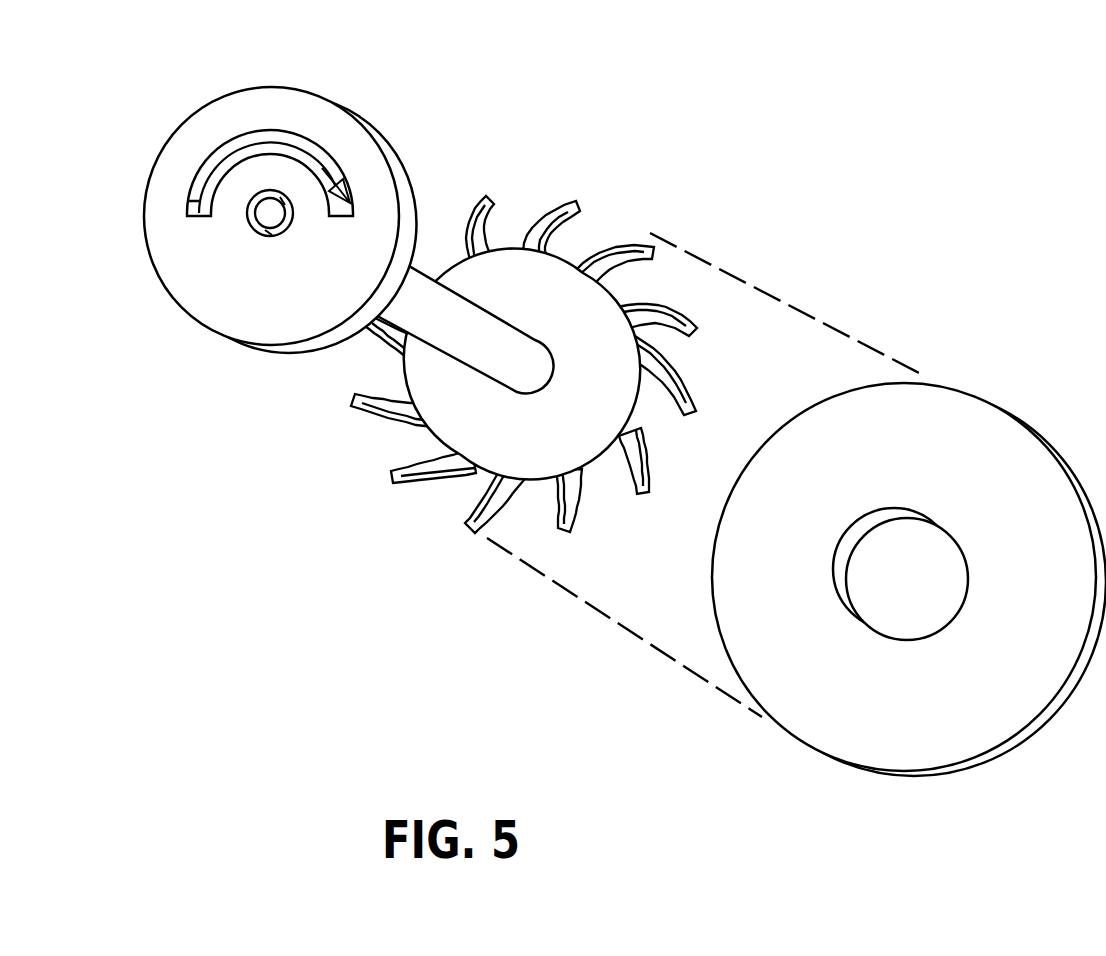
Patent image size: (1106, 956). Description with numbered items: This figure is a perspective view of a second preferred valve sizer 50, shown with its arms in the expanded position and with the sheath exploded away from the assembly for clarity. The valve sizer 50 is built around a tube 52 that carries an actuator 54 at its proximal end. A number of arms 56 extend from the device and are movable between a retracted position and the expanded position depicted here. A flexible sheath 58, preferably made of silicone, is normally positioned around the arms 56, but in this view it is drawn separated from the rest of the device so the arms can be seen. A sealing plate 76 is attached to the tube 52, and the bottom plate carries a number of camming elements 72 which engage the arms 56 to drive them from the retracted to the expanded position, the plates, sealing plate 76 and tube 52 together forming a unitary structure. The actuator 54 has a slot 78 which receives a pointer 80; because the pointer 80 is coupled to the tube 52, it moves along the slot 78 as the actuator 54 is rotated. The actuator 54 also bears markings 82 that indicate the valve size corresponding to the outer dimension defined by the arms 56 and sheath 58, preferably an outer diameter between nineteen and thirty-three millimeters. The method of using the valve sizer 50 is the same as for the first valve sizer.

The valve sizer 50 is at (693, 175).
The tube 52 is at (457, 348).
The actuator 54 is at (280, 218).
The arms 56 is at (516, 349).
The flexible sheath 58 is at (987, 420).
The camming elements 72 is at (597, 465).
The sealing plate 76 is at (440, 437).
The slot 78 is at (197, 215).
The pointer 80 is at (333, 212).
The markings 82 is at (256, 100).